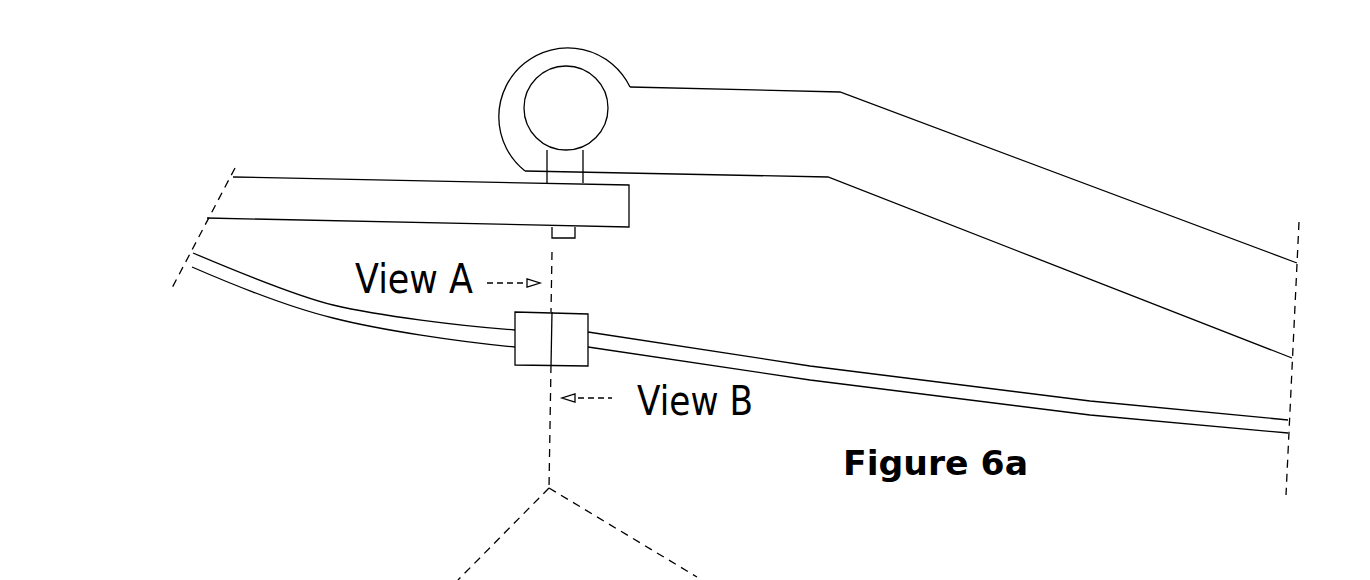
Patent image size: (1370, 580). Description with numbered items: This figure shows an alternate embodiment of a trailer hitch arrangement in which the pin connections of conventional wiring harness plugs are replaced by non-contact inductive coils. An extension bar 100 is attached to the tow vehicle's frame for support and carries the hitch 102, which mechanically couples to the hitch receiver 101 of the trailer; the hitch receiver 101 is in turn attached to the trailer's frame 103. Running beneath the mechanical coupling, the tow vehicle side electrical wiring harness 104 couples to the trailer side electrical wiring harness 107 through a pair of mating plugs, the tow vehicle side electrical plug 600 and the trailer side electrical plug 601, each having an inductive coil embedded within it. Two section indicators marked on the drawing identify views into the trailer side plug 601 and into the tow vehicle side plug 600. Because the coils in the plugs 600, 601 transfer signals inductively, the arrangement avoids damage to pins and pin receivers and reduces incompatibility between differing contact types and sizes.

The extension bar 100 is at (340, 177).
The hitch receiver 101 is at (498, 122).
The hitch 102 is at (528, 127).
The trailer's frame 103 is at (1050, 170).
The tow vehicle side electrical wiring harness 104 is at (335, 318).
The trailer side electrical wiring harness 107 is at (917, 380).
The tow vehicle side electrical plug 600 is at (513, 358).
The trailer side electrical plug 601 is at (580, 313).